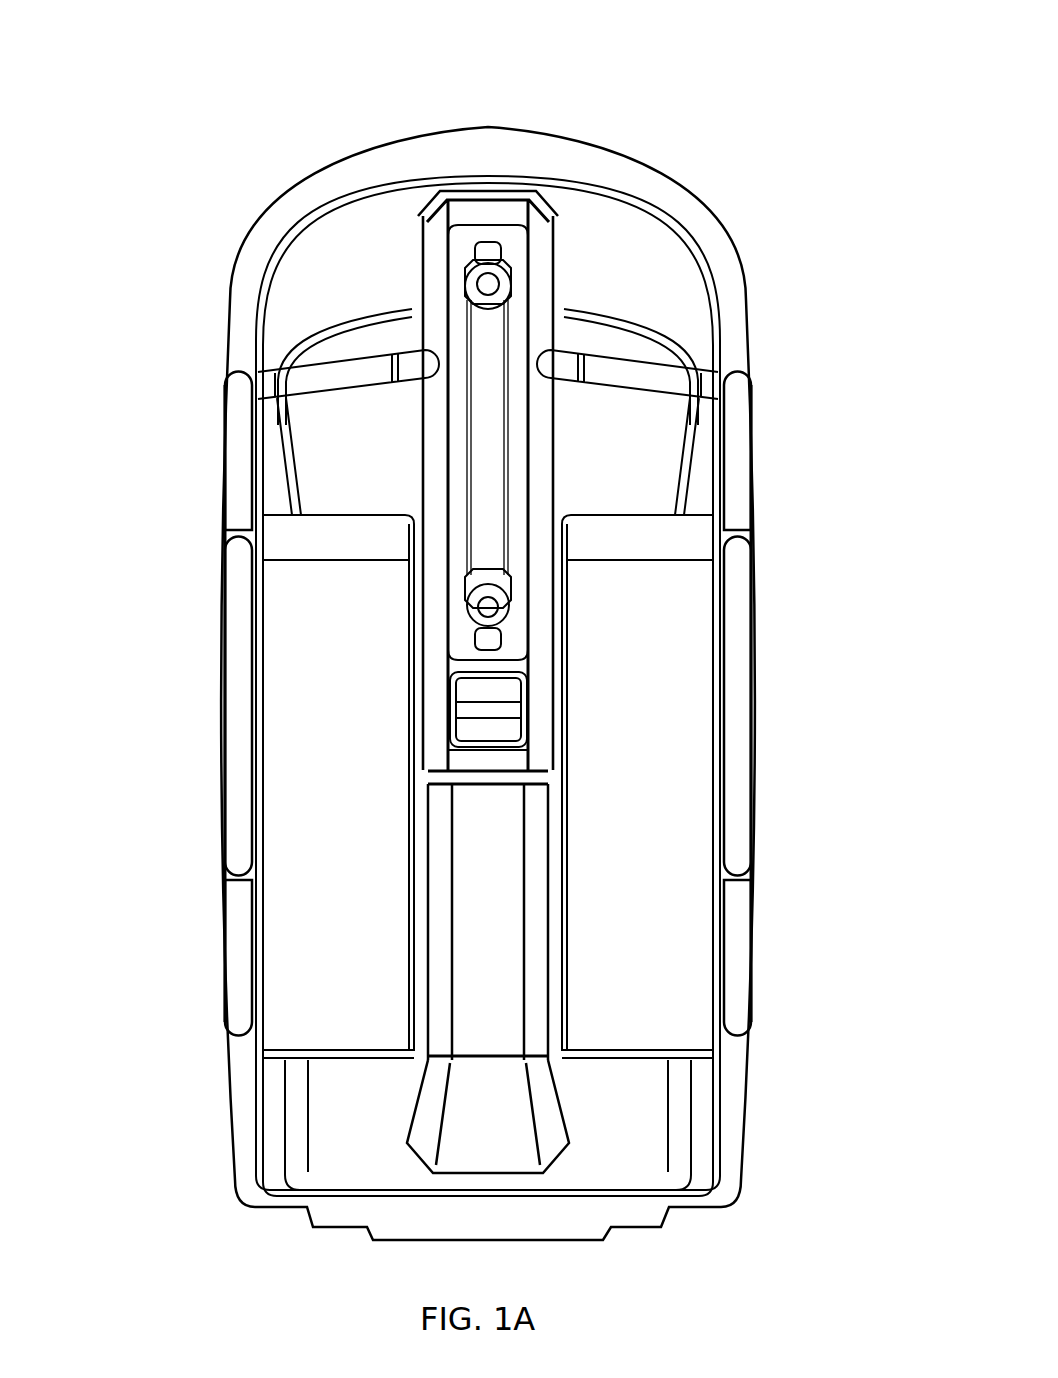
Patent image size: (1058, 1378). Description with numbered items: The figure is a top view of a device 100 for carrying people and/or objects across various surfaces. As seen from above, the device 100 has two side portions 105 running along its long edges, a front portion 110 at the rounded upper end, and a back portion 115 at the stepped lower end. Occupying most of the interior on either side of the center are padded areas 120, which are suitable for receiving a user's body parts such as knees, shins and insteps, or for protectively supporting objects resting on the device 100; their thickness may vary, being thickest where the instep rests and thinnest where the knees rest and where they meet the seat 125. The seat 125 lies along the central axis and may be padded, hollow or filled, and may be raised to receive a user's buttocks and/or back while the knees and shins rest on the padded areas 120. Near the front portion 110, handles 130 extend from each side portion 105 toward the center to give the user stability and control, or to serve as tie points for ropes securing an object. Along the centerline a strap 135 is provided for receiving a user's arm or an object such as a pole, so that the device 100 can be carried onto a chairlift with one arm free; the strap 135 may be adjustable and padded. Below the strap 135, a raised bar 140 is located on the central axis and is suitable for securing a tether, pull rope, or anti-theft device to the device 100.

The device 100 is at (708, 143).
The side portions 105 is at (207, 805).
The front portion 110 is at (268, 203).
The back portion 115 is at (372, 1240).
The padded areas 120 is at (285, 620).
The seat 125 is at (478, 938).
The handles 130 is at (238, 585).
The straps 135 is at (483, 352).
The raised bar 140 is at (462, 707).